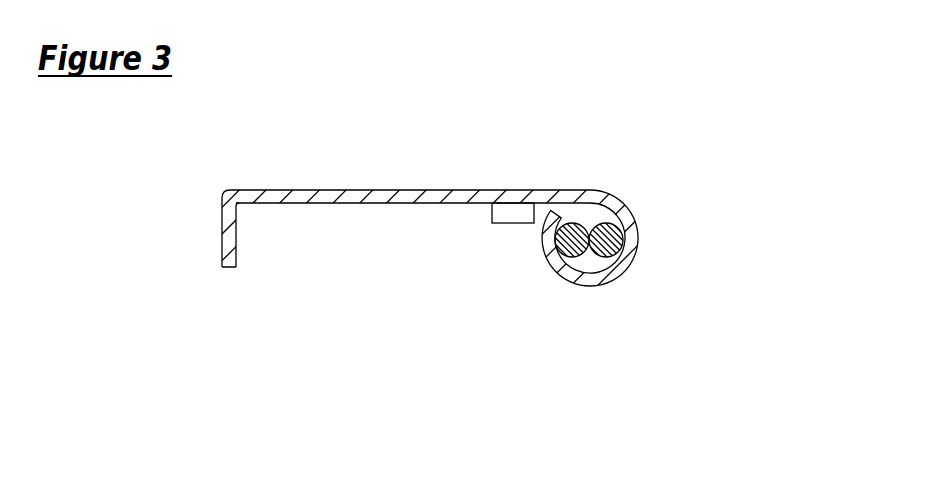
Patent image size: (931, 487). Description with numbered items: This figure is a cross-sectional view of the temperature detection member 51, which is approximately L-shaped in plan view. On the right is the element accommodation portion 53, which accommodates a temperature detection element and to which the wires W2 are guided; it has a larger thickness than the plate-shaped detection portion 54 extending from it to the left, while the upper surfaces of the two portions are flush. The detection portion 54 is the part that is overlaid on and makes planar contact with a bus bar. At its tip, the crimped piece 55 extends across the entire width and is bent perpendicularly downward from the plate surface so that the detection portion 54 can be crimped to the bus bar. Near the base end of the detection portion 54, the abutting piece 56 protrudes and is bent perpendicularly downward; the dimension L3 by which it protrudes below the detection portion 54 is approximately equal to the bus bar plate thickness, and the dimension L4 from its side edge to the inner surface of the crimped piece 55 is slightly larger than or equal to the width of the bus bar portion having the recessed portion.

The temperature detection member 51 is at (518, 113).
The element accommodation portion 53 is at (627, 255).
The detection portion 54 is at (327, 189).
The crimped piece 55 is at (224, 242).
The abutting piece 56 is at (502, 213).
The wires W2 is at (605, 258).
The dimension L3 is at (627, 204).
The dimension L4 is at (492, 345).